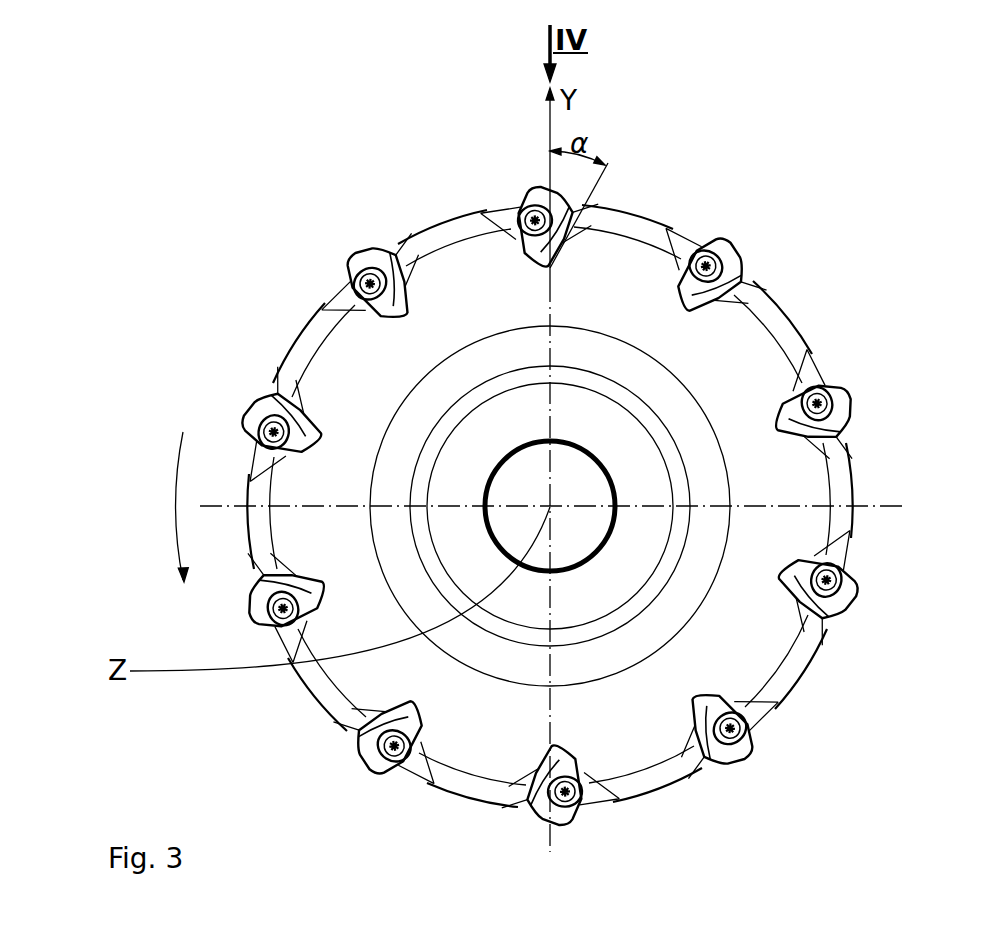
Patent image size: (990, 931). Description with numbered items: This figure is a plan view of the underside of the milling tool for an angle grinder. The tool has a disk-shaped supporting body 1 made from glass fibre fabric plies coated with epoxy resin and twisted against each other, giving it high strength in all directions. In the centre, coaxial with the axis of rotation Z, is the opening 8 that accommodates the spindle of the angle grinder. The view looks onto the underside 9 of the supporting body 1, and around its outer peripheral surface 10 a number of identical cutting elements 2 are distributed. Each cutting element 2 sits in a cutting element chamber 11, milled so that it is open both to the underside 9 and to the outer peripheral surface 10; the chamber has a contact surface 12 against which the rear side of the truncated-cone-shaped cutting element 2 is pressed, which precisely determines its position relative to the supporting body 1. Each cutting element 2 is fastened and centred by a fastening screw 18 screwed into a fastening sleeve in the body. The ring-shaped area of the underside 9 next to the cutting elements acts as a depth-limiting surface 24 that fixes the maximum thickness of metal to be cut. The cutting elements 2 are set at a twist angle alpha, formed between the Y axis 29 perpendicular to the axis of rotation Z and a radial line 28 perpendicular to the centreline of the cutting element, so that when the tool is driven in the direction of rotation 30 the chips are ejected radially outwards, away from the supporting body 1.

The supporting body 1 is at (458, 160).
The cutting element 2 is at (853, 588).
The opening 8 is at (593, 485).
The underside 9 is at (342, 352).
The outer peripheral surface 10 is at (266, 383).
The cutting element chamber 11 is at (828, 621).
The contact surface 12 is at (708, 695).
The fastening screw 18 is at (706, 252).
The depth-limiting surface 24 is at (750, 350).
The radial line 28 is at (607, 178).
The Y axis 29 is at (550, 173).
The direction of rotation 30 is at (178, 480).